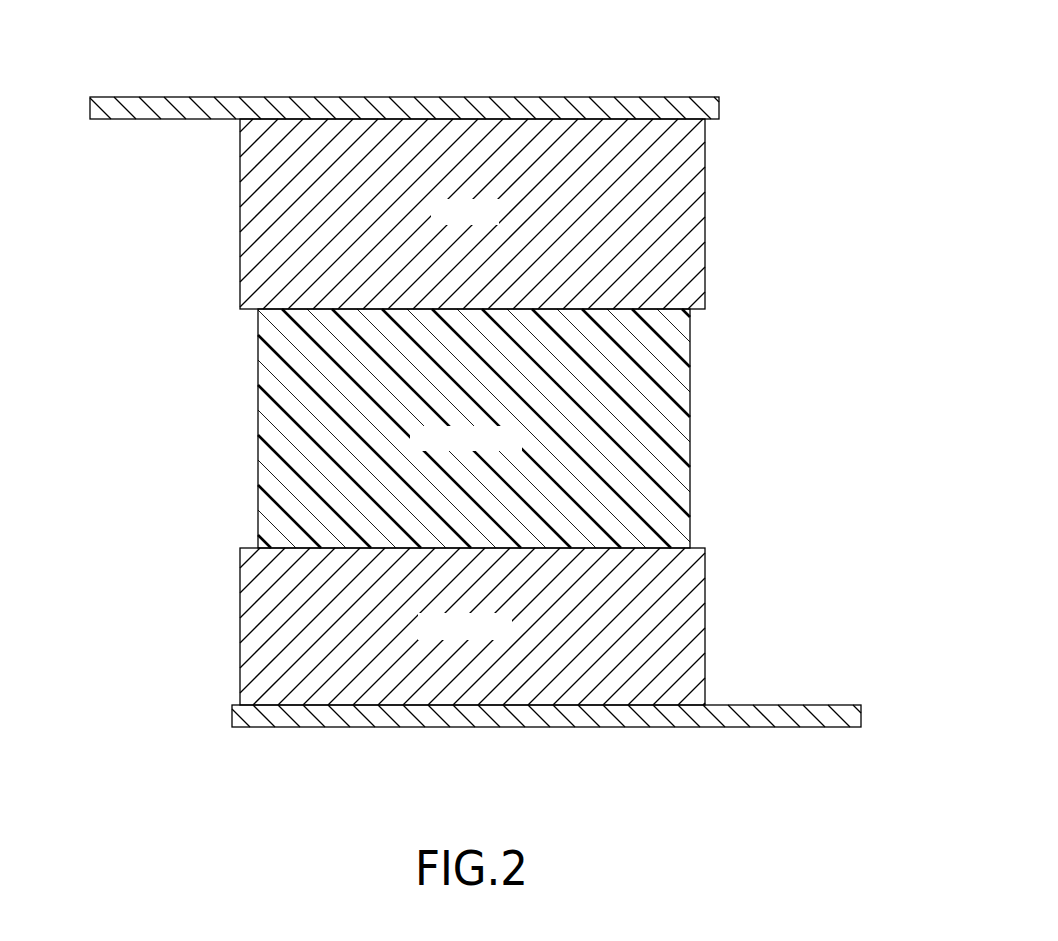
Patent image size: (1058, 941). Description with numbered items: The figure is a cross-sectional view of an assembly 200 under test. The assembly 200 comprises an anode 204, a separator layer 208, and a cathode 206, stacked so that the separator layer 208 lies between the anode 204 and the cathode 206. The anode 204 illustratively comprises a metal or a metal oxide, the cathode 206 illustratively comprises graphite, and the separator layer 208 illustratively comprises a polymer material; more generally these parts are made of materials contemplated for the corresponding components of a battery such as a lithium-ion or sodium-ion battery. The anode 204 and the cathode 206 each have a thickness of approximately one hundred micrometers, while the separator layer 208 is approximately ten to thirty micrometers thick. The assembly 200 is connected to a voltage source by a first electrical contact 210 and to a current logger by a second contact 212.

The assembly 200 is at (481, 46).
The anode 204 is at (705, 192).
The cathode 206 is at (705, 637).
The separator layer 208 is at (690, 430).
The first electrical contact 210 is at (90, 108).
The second contact 212 is at (861, 712).